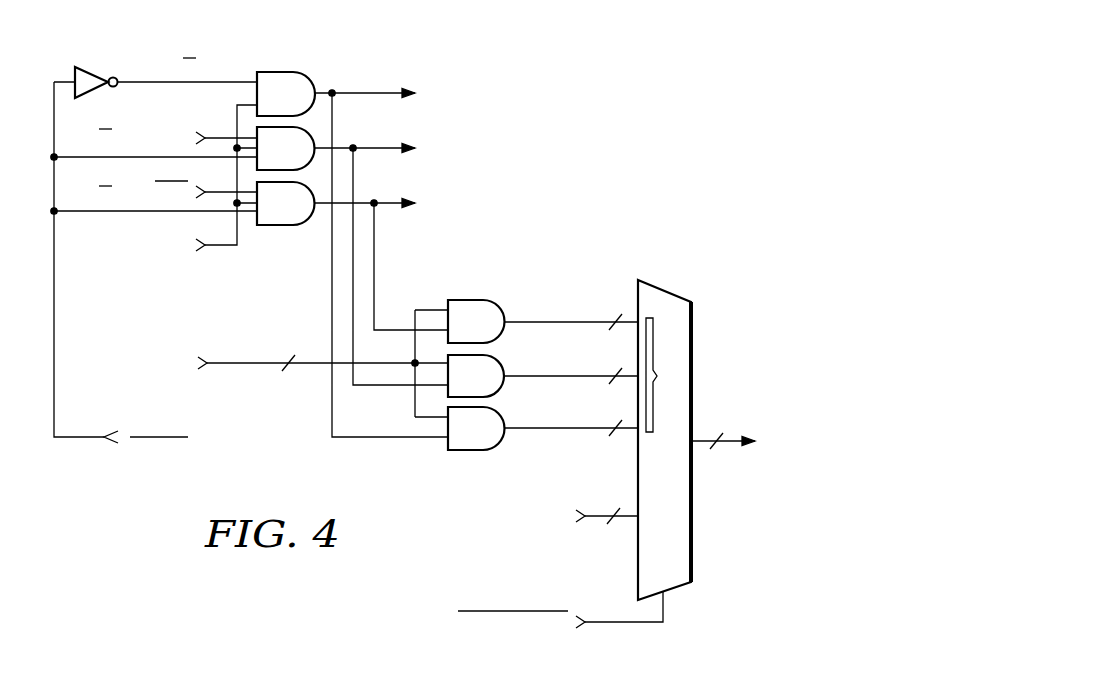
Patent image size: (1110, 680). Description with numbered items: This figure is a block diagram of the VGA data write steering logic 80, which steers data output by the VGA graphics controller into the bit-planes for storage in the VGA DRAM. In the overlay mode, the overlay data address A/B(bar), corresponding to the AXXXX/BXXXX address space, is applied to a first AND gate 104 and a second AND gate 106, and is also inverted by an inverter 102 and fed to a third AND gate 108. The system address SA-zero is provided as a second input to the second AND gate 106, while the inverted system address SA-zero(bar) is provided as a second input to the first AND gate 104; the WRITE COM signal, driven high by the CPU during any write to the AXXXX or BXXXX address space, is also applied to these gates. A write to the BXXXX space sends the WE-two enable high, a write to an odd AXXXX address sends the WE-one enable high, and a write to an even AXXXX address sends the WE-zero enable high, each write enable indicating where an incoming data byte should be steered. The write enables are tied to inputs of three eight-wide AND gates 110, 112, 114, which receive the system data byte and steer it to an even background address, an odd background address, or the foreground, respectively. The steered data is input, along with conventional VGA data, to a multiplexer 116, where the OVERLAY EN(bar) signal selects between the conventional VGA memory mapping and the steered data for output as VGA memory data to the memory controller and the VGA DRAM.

The VGA data write steering logic 80 is at (732, 58).
The inverter 102 is at (89, 67).
The first AND gate 104 is at (270, 226).
The second AND gate 106 is at (312, 134).
The third AND gate 108 is at (282, 72).
The AND gate 110 is at (466, 300).
The AND gate 112 is at (440, 396).
The AND gate 114 is at (460, 452).
The multiplexer 116 is at (692, 333).